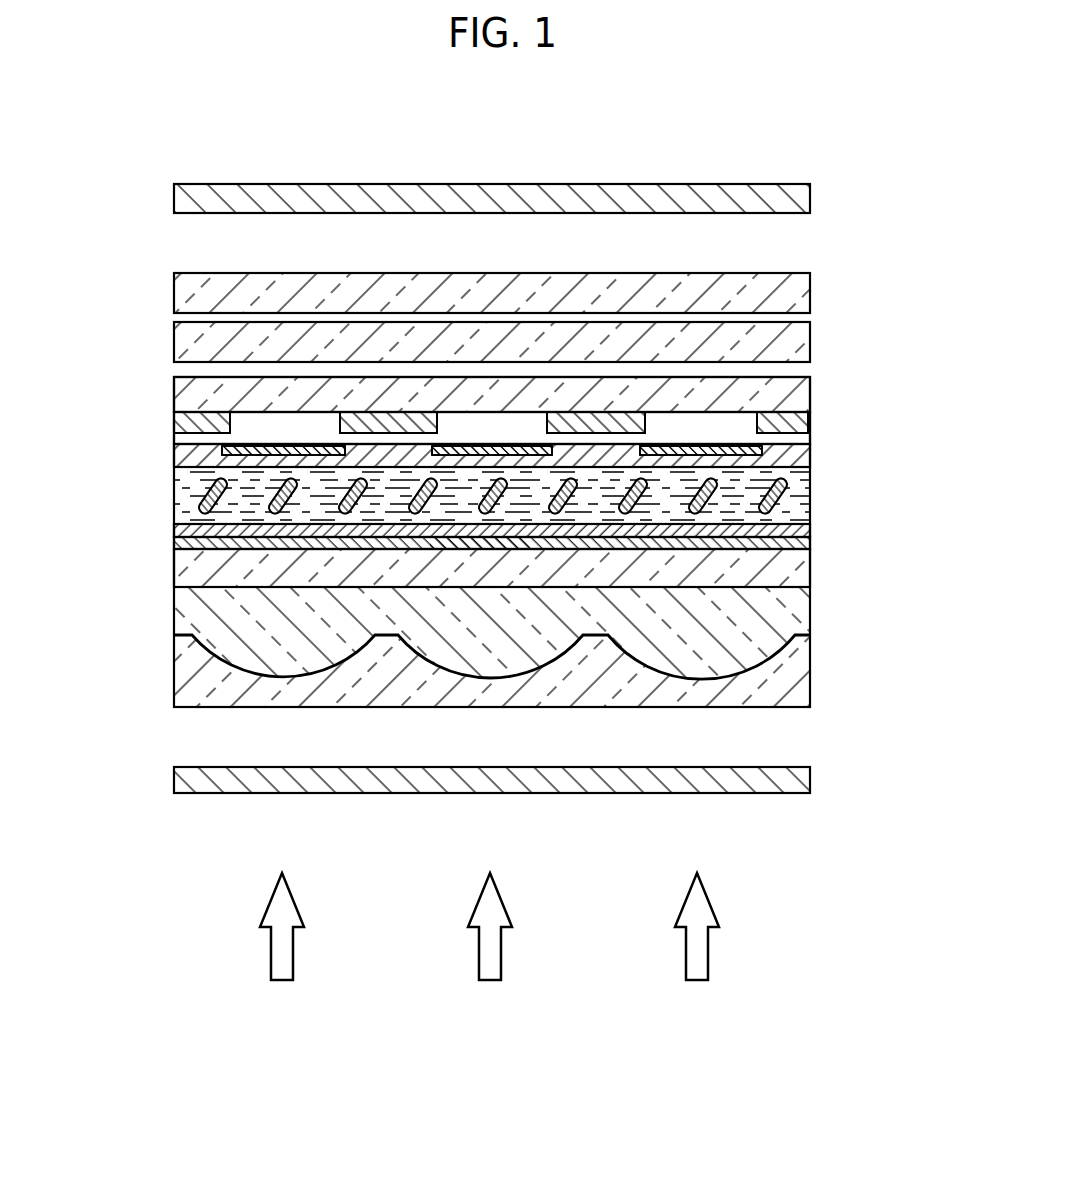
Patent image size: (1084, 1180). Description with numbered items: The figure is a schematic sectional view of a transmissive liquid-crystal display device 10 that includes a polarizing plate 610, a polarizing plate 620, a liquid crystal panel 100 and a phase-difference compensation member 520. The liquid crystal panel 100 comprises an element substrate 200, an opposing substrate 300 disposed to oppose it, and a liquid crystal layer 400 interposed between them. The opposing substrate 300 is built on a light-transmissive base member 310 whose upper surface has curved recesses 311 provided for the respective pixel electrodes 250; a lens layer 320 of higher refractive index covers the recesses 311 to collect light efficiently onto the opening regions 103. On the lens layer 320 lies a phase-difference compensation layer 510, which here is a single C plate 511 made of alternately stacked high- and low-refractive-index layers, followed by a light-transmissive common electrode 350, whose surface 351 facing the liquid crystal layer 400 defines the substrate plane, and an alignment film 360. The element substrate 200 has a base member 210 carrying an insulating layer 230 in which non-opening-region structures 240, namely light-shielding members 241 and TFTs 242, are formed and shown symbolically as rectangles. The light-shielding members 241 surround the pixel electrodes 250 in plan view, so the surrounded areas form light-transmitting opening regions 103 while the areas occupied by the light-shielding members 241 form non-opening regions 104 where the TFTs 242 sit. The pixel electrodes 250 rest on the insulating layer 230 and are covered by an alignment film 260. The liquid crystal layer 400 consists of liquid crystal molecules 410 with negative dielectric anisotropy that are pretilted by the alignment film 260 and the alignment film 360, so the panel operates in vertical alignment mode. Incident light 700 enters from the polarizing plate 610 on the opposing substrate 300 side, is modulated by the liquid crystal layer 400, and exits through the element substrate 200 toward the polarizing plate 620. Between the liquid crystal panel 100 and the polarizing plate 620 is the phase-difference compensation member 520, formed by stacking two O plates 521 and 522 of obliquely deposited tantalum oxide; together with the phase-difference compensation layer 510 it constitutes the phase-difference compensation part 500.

The liquid-crystal display device 10 is at (604, 160).
The liquid crystal panel 100 is at (137, 383).
The opening region 103 is at (492, 438).
The non-opening region 104 is at (598, 406).
The element substrate 200 is at (893, 432).
The base member 210 is at (810, 385).
The insulating layer 230 is at (810, 440).
The non-opening-region structures 240 is at (810, 414).
The light-shielding members 241 is at (598, 426).
The TFTs 242 is at (598, 426).
The pixel electrodes 250 is at (810, 457).
The alignment film 260 is at (810, 468).
The opposing substrate 300 is at (893, 608).
The base member 310 is at (810, 677).
The curved recesses 311 is at (555, 676).
The lens layer 320 is at (810, 623).
The common electrode 350 is at (810, 547).
The surface 351 is at (478, 549).
The alignment film 360 is at (810, 525).
The liquid crystal layer 400 is at (797, 505).
The liquid crystal molecules 410 is at (708, 502).
The phase-difference compensation part 500 is at (101, 303).
The phase-difference compensation layer 510 is at (176, 566).
The C plate 511 is at (810, 575).
The phase-difference compensation member 520 is at (166, 274).
The O plate 521 is at (810, 338).
The O plate 522 is at (810, 287).
The polarizing plate 610 is at (810, 780).
The polarizing plate 620 is at (810, 200).
The incident light 700 is at (502, 955).